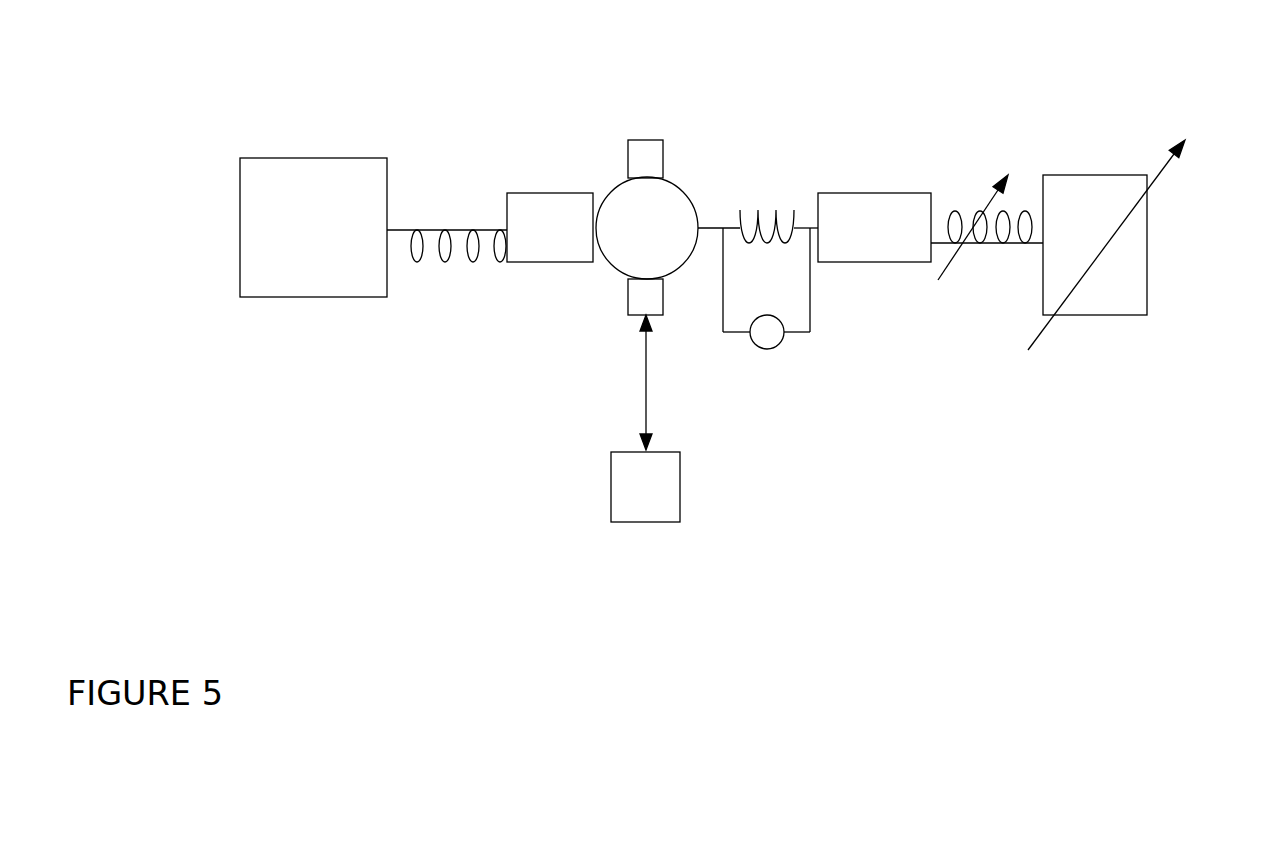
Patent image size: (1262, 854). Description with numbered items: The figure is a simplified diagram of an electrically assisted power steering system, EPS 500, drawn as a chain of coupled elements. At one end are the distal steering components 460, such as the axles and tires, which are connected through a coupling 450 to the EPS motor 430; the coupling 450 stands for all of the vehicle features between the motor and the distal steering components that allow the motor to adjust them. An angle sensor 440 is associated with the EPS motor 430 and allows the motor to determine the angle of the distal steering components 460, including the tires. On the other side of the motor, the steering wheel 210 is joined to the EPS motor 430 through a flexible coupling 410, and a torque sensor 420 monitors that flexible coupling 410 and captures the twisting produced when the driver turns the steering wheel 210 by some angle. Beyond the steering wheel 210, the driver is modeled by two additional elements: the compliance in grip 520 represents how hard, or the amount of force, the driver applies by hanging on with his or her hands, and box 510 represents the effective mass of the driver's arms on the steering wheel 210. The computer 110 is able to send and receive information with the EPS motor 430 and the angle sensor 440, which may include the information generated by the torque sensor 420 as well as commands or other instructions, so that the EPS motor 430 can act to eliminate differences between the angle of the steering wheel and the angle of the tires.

The computer 110 is at (680, 488).
The steering wheel 210 is at (860, 193).
The flexible coupling 410 is at (756, 349).
The torque sensor 420 is at (767, 228).
The EPS motor 430 is at (650, 140).
The angle sensor 440 is at (556, 193).
The coupling 450 is at (462, 262).
The distal steering components 460 is at (320, 158).
The EPS 500 is at (163, 653).
The box representing effective mass of the driver's arms 510 is at (1147, 247).
The compliance in grip 520 is at (982, 210).